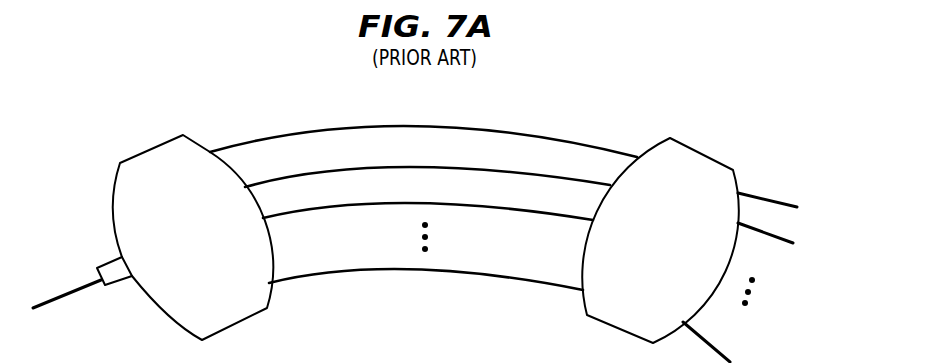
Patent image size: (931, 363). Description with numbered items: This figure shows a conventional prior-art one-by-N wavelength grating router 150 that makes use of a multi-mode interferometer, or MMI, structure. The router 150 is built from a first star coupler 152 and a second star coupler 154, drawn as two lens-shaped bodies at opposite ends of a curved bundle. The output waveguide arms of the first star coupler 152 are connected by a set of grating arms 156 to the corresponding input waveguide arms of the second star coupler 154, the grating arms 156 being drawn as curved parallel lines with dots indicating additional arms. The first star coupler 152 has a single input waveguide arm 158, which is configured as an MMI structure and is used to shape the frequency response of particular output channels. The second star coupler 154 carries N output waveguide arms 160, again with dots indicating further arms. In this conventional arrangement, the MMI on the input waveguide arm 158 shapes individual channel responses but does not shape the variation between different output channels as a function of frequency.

The wavelength grating router 150 is at (179, 93).
The first star coupler 152 is at (150, 148).
The second star coupler 154 is at (698, 152).
The grating arms 156 is at (500, 129).
The input waveguide arm 158 is at (118, 281).
The output waveguide arms 160 is at (767, 193).